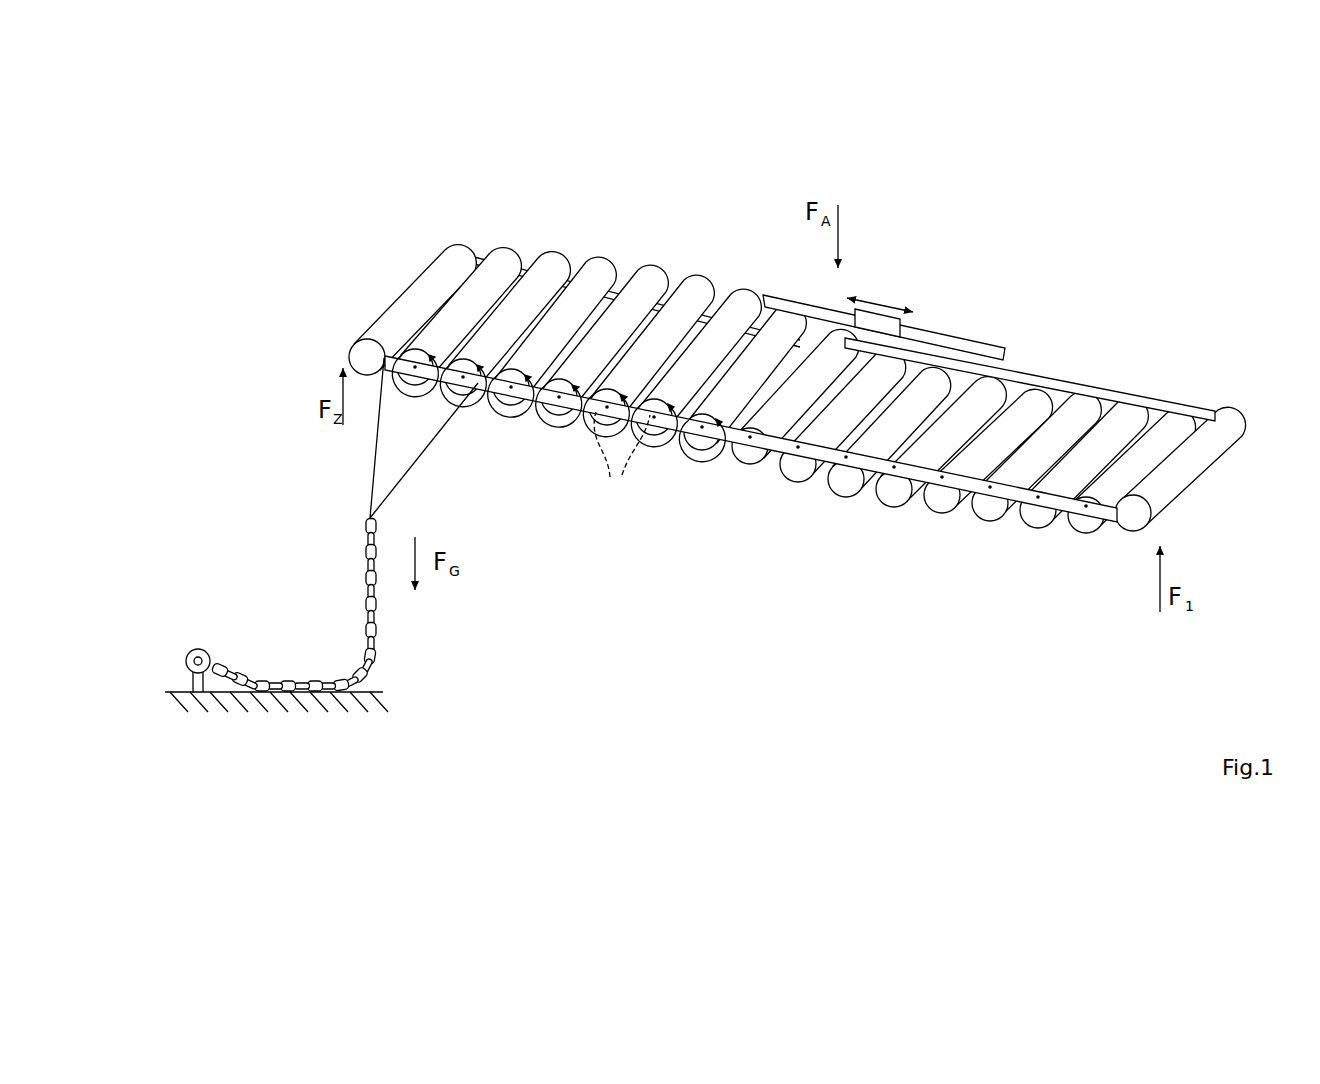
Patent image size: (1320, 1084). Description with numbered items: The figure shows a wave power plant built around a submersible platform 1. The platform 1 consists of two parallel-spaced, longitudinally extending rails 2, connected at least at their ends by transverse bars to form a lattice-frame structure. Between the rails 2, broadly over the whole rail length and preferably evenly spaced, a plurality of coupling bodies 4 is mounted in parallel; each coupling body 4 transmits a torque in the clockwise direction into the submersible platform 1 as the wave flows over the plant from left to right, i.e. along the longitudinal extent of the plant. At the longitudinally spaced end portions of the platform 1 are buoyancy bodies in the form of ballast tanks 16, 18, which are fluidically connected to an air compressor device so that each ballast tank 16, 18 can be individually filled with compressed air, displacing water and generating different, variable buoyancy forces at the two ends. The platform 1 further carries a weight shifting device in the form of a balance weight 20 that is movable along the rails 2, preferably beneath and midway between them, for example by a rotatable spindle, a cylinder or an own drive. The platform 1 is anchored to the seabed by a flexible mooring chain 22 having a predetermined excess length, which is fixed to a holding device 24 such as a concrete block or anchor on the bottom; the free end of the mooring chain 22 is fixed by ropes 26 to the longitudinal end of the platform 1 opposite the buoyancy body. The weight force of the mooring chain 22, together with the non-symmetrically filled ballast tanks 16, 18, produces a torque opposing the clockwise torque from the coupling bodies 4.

The submersible platform 1 is at (781, 404).
The rails 2 is at (781, 403).
The coupling bodies 4 is at (1090, 398).
The ballast tank 16 is at (380, 313).
The ballast tank 18 is at (1168, 478).
The balance weight 20 is at (894, 300).
The mooring chain 22 is at (380, 622).
The holding device 24 is at (194, 651).
The ropes 26 is at (374, 448).